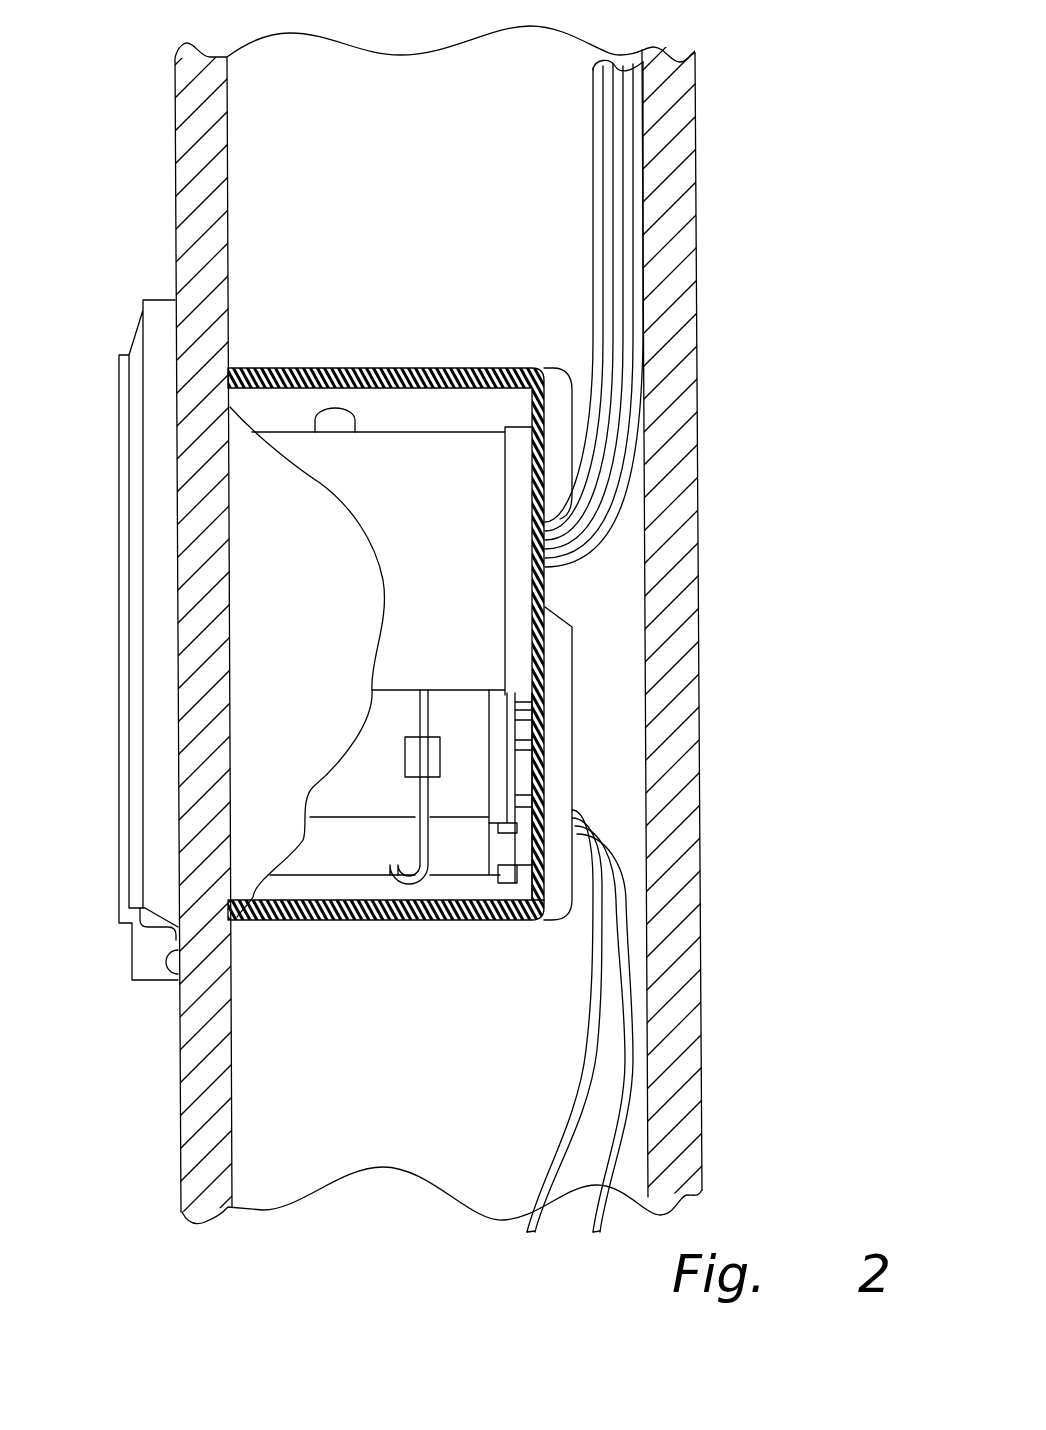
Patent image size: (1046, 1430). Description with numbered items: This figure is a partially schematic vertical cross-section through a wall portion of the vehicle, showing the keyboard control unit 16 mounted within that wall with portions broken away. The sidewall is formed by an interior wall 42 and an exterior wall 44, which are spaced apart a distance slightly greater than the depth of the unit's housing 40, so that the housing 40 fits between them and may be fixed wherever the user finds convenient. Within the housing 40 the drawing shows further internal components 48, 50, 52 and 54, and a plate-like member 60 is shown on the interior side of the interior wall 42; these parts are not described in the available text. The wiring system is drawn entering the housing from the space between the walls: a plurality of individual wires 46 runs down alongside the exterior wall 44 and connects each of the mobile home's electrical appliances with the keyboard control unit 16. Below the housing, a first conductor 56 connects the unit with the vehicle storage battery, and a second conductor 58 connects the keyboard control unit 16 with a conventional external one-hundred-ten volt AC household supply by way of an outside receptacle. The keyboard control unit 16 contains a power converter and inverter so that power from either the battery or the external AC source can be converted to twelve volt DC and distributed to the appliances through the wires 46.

The keyboard control unit 16 is at (330, 222).
The housing 40 is at (300, 365).
The interior wall 42 is at (190, 138).
The exterior wall 44 is at (685, 208).
The individual wires 46 is at (627, 128).
The connector 48 is at (473, 710).
The circuit board 50 is at (303, 840).
The battery 52 is at (390, 547).
The housing bottom wall 54 is at (267, 920).
The first conductor 56 is at (617, 880).
The second conductor 58 is at (600, 987).
The mounting plate 60 is at (160, 725).